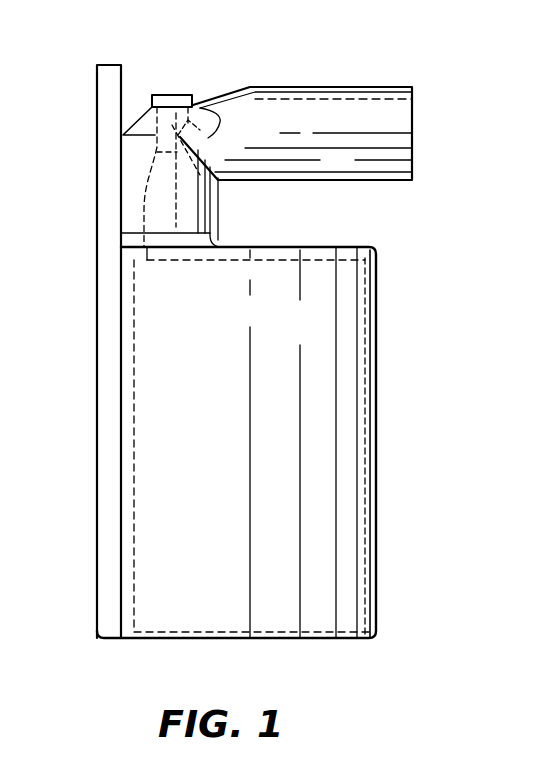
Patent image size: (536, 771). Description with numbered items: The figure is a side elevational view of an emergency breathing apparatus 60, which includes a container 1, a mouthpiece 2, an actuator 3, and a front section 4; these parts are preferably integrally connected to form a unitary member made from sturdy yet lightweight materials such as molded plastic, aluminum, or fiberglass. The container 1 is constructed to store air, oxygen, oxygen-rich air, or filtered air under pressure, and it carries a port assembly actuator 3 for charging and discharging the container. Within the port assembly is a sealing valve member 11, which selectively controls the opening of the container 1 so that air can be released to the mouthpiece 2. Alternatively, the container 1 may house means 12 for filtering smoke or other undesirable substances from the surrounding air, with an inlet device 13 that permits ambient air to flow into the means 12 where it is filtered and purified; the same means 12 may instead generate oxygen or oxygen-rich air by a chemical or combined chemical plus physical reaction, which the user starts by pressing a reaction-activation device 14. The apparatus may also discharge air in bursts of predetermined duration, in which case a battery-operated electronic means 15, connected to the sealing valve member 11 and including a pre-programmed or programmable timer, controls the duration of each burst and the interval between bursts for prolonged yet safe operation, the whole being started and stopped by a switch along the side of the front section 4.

The container 1 is at (393, 472).
The mouthpiece 2 is at (380, 77).
The actuator 3 is at (175, 83).
The front section 4 is at (82, 263).
The sealing valve member 11 is at (199, 105).
The means for filtering 12 is at (133, 417).
The inlet device 13 is at (360, 247).
The reaction-activation device 14 is at (283, 245).
The battery-operated electronic means 15 is at (144, 107).
The emergency breathing apparatus 60 is at (393, 347).